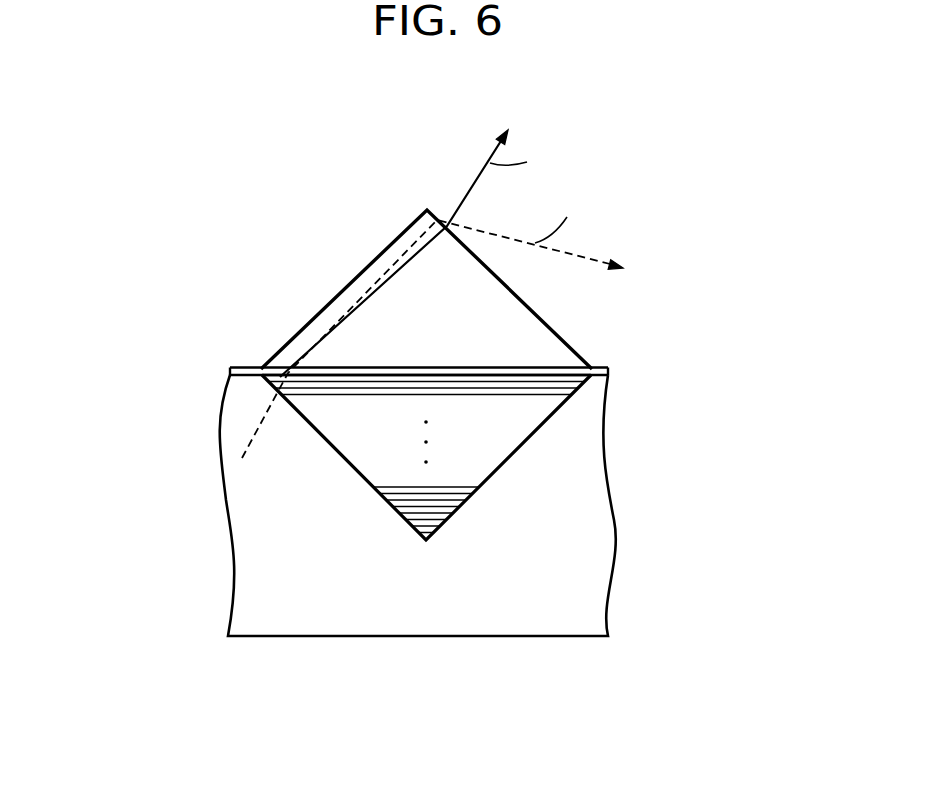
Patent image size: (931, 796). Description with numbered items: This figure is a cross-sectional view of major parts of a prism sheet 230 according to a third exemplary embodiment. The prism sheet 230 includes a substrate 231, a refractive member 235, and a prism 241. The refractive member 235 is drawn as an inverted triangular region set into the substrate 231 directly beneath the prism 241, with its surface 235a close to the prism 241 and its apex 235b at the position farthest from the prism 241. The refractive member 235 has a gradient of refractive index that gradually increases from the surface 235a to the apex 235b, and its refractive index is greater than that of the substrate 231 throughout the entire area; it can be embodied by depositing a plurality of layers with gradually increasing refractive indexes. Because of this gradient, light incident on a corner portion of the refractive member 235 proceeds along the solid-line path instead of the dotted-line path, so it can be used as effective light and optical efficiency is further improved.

The prism sheet 230 is at (182, 338).
The substrate 231 is at (588, 587).
The refractive member 235 is at (528, 421).
The surface 235a is at (567, 375).
The apex 235b is at (432, 537).
The prism 241 is at (507, 315).